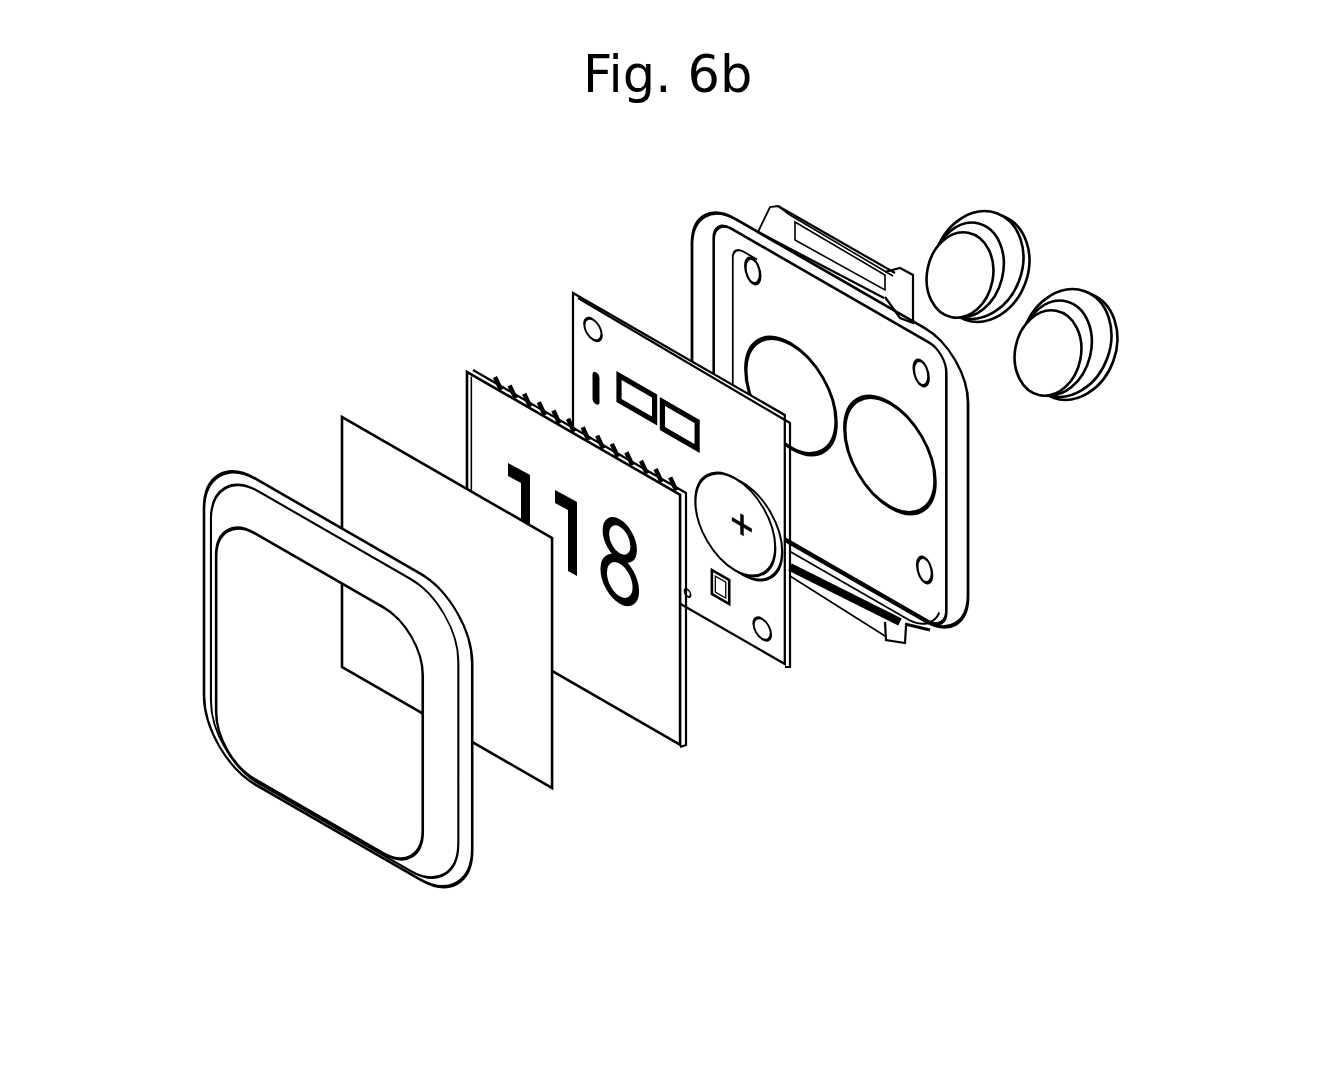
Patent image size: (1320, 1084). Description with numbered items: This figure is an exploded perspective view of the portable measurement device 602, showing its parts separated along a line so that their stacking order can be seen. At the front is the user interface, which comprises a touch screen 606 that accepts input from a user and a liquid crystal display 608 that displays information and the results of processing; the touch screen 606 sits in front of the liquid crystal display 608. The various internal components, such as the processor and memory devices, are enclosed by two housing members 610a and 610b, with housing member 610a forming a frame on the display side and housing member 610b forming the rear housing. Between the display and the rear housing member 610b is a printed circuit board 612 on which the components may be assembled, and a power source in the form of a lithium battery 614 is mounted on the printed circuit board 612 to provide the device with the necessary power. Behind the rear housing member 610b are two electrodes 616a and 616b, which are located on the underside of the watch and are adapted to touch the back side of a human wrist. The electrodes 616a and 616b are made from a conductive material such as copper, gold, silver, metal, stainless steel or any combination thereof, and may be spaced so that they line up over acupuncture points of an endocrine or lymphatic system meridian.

The portable device 602 is at (714, 537).
The touch screen 606 is at (343, 460).
The liquid crystal display 608 is at (478, 413).
The housing member 610a is at (445, 878).
The housing member 610b is at (945, 590).
The printed circuit board 612 is at (695, 494).
The lithium battery 614 is at (775, 565).
The electrode 616a is at (1010, 228).
The electrode 616b is at (1118, 330).